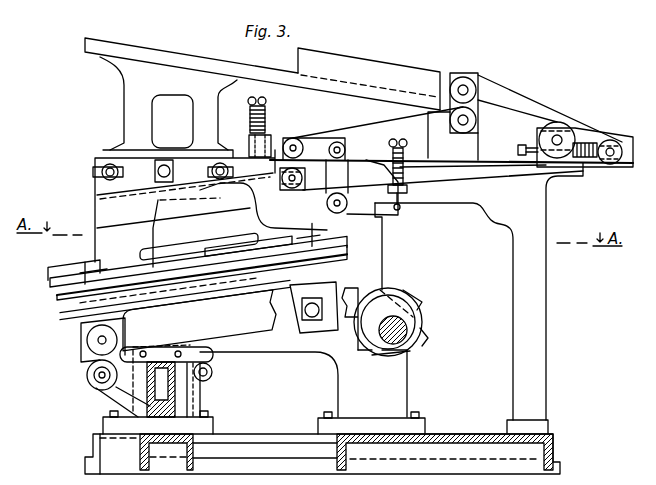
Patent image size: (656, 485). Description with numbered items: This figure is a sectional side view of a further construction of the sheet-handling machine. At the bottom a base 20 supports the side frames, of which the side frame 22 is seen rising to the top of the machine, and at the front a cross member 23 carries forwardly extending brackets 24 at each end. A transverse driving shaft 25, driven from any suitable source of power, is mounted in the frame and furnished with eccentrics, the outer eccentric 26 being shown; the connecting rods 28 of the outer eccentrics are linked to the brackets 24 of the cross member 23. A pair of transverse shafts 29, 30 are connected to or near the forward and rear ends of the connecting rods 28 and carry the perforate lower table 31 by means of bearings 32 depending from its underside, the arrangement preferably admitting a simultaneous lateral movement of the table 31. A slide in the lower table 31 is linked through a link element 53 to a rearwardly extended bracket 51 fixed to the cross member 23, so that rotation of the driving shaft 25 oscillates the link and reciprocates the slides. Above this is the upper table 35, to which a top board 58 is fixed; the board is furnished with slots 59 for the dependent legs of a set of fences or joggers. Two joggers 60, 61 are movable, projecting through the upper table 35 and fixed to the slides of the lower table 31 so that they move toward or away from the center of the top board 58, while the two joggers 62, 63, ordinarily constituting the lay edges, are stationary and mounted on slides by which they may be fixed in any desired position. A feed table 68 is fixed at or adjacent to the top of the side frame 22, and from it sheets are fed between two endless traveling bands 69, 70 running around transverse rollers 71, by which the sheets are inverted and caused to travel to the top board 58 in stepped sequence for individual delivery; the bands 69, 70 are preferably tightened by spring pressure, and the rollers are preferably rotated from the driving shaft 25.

The base 20 is at (95, 446).
The side frame 22 is at (97, 225).
The cross member 23 is at (201, 399).
The bracket 24 is at (107, 392).
The driving shaft 25 is at (426, 342).
The eccentric 26 is at (423, 313).
The connecting rod 28 is at (390, 282).
The transverse shaft 29 is at (100, 340).
The transverse shaft 30 is at (328, 333).
The perforate table 31 is at (333, 274).
The bearing 32 is at (292, 331).
The upper table 35 is at (53, 297).
The bracket 51 is at (211, 378).
The link element 53 is at (208, 362).
The top board 58 is at (53, 270).
The slot 59 is at (50, 282).
The movable jogger 60 is at (347, 234).
The movable jogger 61 is at (190, 242).
The stationary jogger 62 is at (89, 267).
The stationary jogger 63 is at (223, 256).
The feed table 68 is at (160, 50).
The endless traveling band 69 is at (498, 106).
The endless traveling band 70 is at (355, 140).
The transverse roller 71 is at (292, 141).